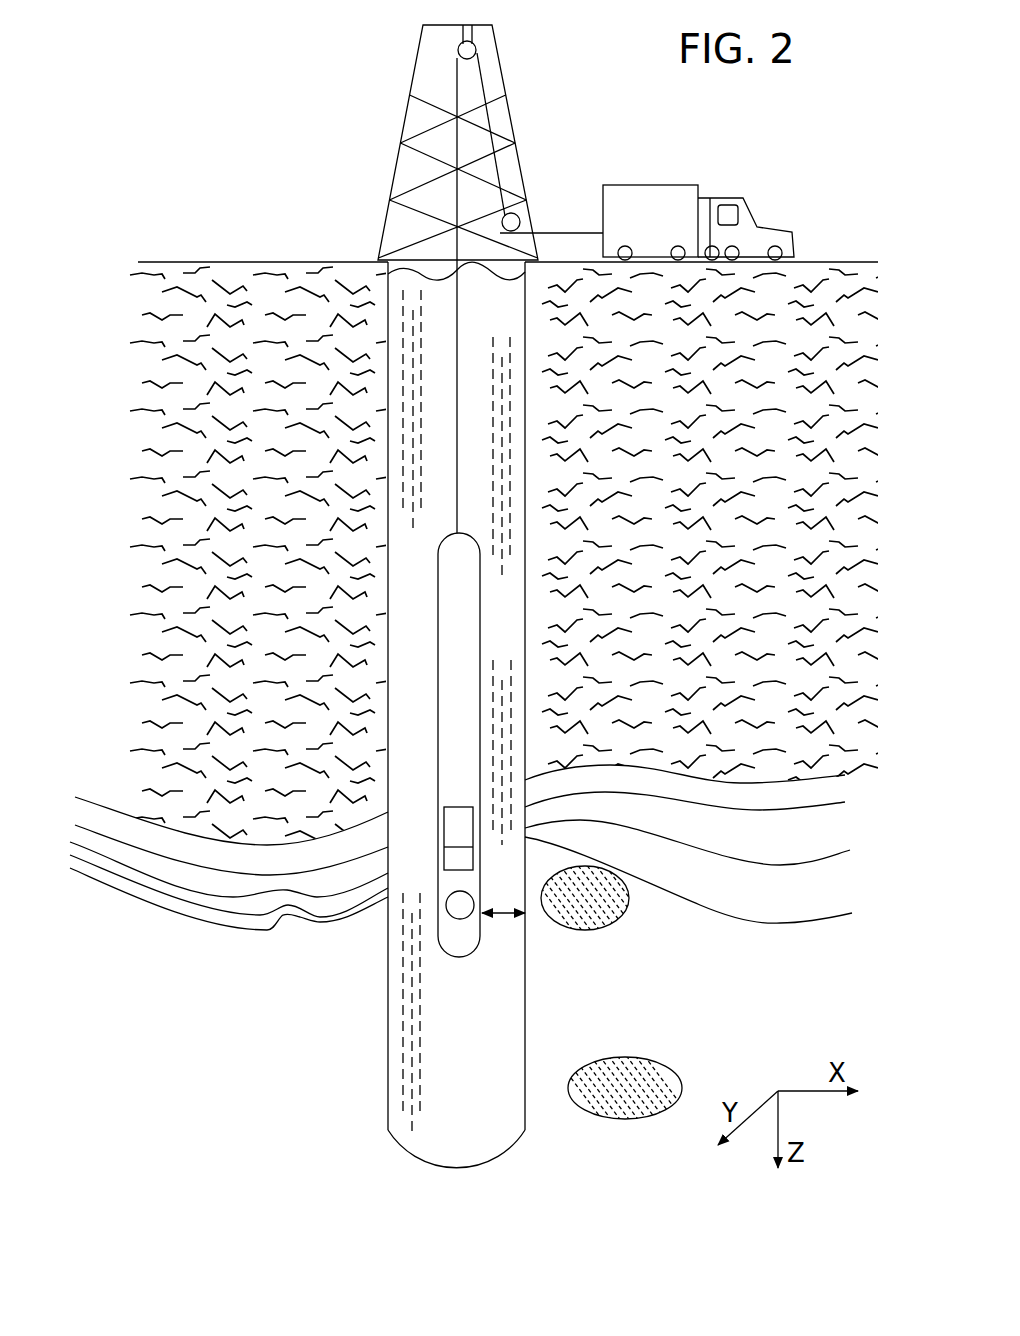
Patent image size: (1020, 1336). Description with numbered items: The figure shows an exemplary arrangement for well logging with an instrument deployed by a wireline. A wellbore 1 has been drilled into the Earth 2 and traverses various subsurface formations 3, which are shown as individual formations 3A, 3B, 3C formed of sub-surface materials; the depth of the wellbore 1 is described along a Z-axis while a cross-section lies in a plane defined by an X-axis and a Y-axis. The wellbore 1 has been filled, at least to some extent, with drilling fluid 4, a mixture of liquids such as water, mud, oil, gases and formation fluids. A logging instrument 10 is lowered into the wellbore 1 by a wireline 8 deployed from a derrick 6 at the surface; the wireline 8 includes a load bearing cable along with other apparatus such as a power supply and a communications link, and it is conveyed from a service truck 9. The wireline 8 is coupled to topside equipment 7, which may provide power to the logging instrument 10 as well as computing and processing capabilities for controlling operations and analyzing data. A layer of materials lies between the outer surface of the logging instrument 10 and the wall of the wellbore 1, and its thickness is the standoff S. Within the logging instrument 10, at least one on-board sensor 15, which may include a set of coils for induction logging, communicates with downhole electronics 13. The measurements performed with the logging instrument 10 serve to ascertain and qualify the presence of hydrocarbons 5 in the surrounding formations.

The wellbore 1 is at (420, 1153).
The Earth 2 is at (205, 284).
The formations 3 is at (794, 895).
The formation 3A is at (700, 783).
The formation 3B is at (699, 816).
The formation 3C is at (700, 871).
The drilling fluid 4 is at (405, 322).
The hydrocarbons 5 is at (603, 925).
The derrick 6 is at (499, 62).
The topside equipment 7 is at (638, 184).
The wireline 8 is at (457, 78).
The service truck 9 is at (758, 223).
The logging instrument 10 is at (452, 934).
The downhole electronics 13 is at (458, 838).
The sensor 15 is at (446, 906).
The standoff S is at (503, 917).